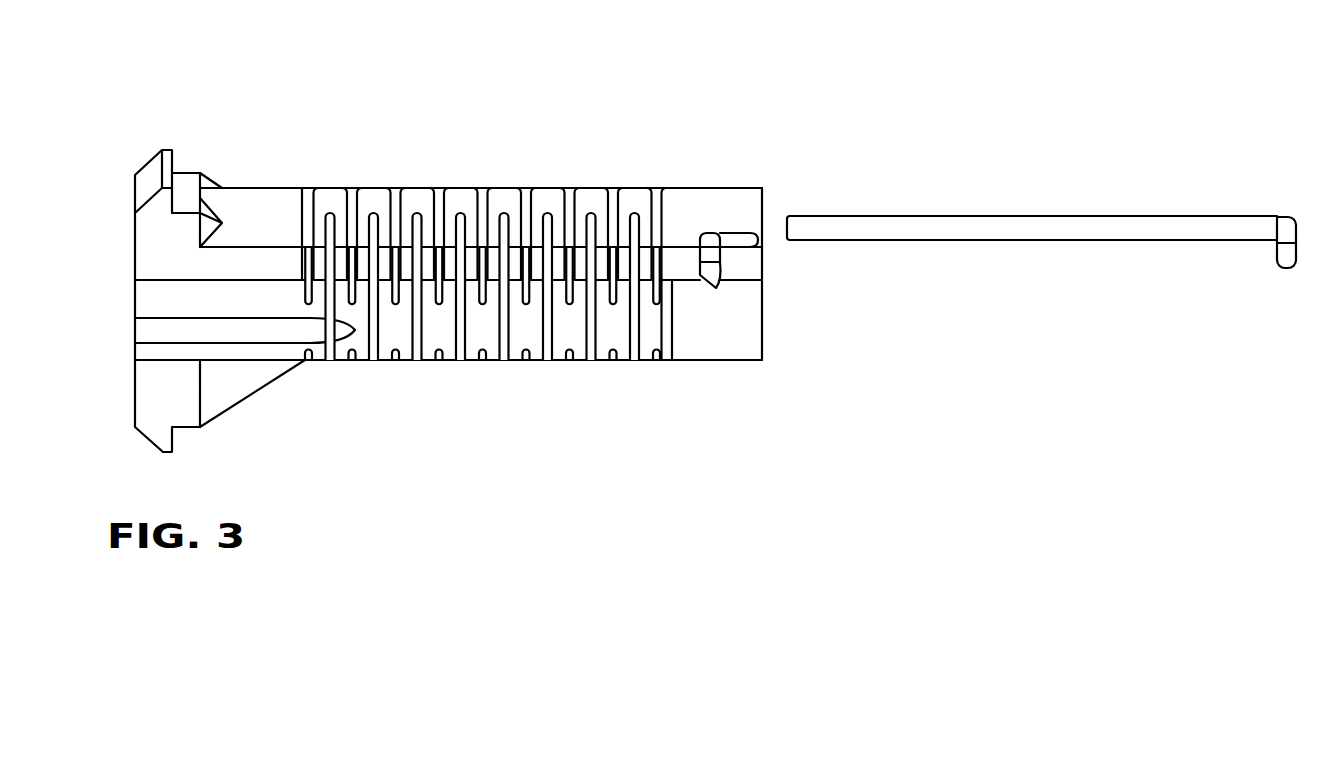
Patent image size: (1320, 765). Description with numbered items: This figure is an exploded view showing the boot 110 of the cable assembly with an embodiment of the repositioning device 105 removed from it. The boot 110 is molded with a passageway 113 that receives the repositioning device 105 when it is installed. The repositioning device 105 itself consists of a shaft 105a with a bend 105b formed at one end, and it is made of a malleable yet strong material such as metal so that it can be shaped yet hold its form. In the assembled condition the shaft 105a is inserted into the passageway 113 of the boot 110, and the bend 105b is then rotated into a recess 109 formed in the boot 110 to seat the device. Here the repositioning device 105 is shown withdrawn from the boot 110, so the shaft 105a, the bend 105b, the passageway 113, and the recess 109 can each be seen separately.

The boot 110 is at (455, 186).
The passageway 113 is at (750, 240).
The recess 109 is at (716, 288).
The repositioning device 105 is at (1041, 232).
The shaft 105a is at (893, 233).
The bend 105b is at (1292, 266).